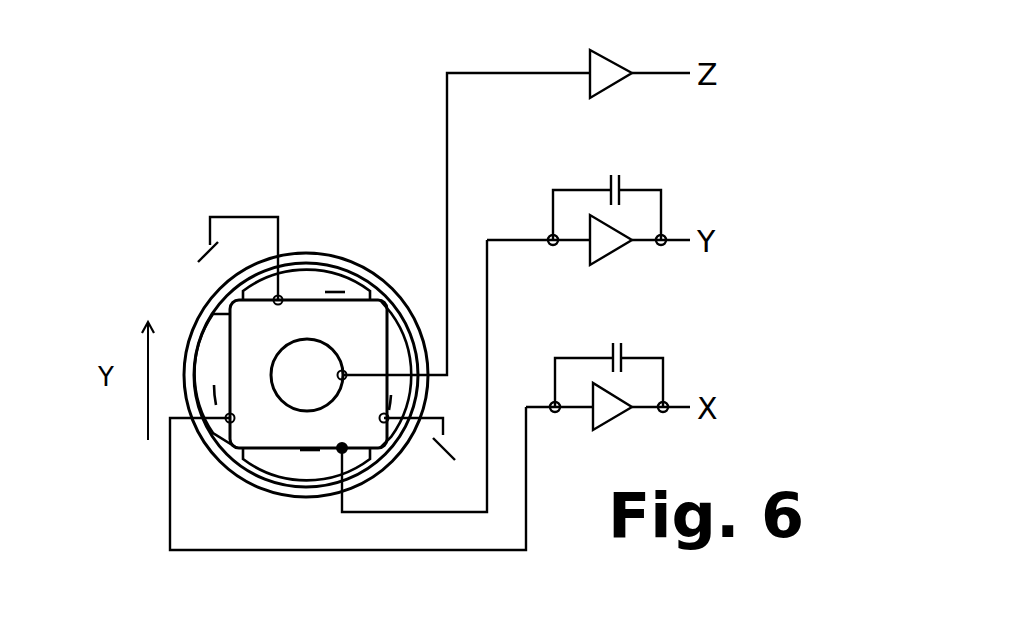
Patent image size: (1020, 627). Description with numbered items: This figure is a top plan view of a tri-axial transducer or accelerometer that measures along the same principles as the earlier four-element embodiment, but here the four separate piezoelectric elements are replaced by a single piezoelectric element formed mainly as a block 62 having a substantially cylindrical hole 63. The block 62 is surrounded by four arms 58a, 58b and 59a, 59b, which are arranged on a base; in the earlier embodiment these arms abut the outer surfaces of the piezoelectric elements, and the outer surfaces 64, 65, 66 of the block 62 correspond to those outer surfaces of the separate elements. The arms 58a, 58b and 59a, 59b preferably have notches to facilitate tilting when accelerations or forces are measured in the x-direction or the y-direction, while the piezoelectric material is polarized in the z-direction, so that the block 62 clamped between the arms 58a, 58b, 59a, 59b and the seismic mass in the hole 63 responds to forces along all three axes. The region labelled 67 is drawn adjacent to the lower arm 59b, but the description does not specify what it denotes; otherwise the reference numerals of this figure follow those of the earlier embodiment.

The arm 58a is at (398, 351).
The arm 58b is at (213, 357).
The arm 59a is at (302, 287).
The arm 59b is at (275, 460).
The block 62 is at (345, 321).
The cylindrical hole 63 is at (291, 366).
The outer surface 64 is at (388, 402).
The outer surface 65 is at (222, 395).
The outer surface 66 is at (336, 294).
The electrode lead connection 67 is at (311, 457).